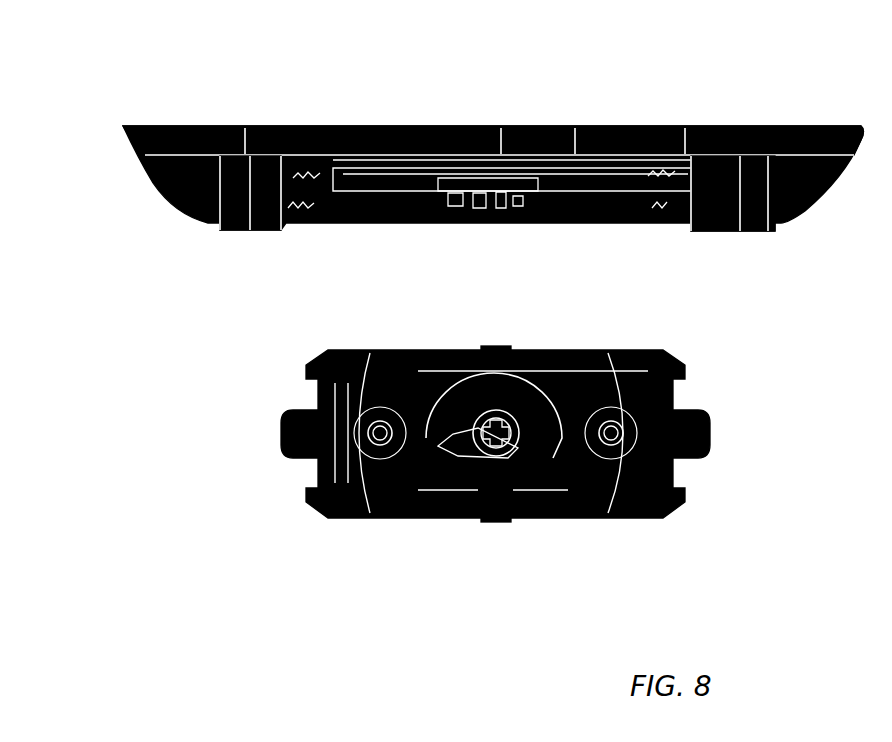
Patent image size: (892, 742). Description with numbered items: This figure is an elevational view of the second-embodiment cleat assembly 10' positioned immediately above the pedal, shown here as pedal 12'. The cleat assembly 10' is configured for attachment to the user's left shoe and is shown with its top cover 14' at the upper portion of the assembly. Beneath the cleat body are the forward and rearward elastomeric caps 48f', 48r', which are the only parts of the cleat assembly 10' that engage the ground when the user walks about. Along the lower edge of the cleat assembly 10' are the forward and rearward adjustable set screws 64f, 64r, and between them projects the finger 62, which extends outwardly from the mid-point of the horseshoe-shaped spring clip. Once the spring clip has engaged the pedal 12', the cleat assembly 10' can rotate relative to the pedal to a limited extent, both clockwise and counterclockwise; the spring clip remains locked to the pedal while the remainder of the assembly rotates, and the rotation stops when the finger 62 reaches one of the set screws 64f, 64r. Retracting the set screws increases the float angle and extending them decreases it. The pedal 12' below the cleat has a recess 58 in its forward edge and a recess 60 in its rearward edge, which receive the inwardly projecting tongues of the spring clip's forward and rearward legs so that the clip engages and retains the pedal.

The cleat assembly 10' is at (454, 187).
The cover 14' is at (493, 108).
The forward elastomeric cap 48f' is at (223, 227).
The rearward elastomeric cap 48r' is at (760, 219).
The forward adjustable set screw 64f is at (305, 213).
The rearward adjustable set screw 64r is at (657, 215).
The finger 62 is at (492, 213).
The recess in pedal's forward edge 58 is at (310, 383).
The recess in pedal's rearward edge 60 is at (667, 383).
The base 12' is at (441, 434).